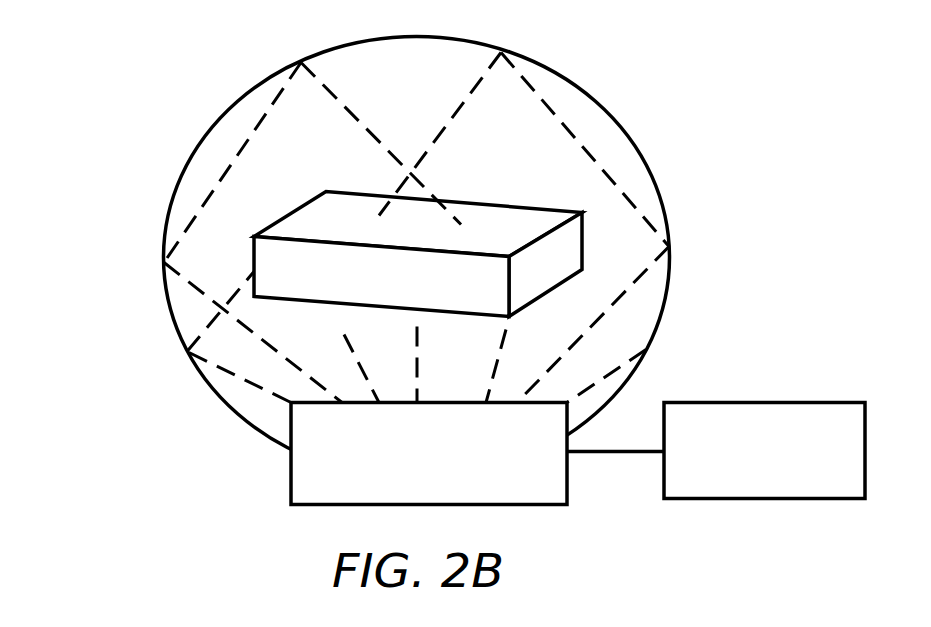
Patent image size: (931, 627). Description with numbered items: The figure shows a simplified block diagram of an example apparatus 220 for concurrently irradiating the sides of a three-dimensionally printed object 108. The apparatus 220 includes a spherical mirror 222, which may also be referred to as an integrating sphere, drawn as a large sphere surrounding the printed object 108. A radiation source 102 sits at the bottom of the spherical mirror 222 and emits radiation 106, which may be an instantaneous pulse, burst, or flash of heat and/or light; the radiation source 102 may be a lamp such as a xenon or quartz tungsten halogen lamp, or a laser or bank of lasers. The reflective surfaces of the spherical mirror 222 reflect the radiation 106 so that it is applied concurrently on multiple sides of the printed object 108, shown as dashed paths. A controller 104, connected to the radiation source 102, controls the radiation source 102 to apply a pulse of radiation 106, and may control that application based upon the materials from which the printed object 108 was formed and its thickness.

The apparatus 220 is at (108, 73).
The spherical mirror 222 is at (638, 148).
The radiation 106 is at (178, 277).
The 3D printed object 108 is at (293, 299).
The radiation source 102 is at (410, 465).
The controller 104 is at (745, 477).